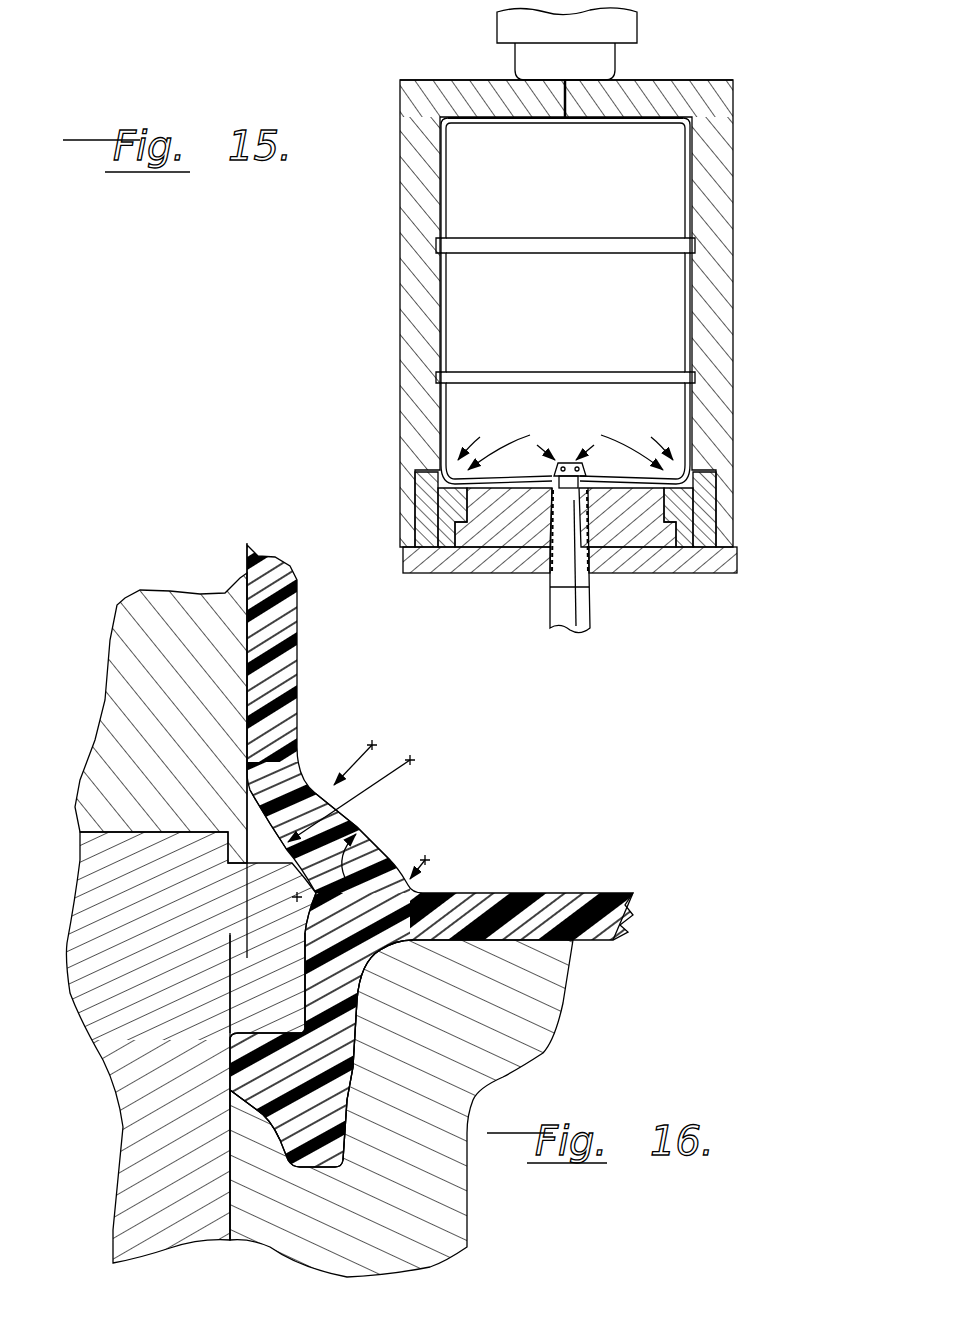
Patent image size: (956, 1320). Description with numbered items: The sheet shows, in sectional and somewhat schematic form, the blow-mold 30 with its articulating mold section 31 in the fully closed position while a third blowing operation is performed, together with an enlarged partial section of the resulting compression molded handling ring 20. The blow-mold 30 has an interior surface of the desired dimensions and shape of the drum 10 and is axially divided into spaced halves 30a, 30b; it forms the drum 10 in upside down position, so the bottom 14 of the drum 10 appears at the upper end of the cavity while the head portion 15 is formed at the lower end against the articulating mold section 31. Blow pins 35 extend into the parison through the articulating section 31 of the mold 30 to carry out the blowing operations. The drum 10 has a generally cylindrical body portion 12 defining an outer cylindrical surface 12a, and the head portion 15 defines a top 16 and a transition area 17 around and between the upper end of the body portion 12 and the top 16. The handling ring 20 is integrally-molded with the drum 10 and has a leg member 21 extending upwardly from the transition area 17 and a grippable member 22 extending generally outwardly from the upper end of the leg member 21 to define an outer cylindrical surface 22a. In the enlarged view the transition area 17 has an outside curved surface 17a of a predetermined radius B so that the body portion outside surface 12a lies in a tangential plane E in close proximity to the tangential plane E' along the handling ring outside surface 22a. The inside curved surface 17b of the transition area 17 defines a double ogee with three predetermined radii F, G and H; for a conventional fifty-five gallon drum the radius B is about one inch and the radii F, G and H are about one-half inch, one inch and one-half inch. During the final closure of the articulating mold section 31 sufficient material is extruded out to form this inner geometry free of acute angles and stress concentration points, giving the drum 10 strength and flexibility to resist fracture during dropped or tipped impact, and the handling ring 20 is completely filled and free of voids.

In FIG. 15, the blow-mold 30 is at (447, 78).
In FIG. 16, the blow-mold 30 is at (122, 1117).
In FIG. 15, the mold half 30a is at (417, 228).
In FIG. 15, the mold half 30b is at (718, 197).
In FIG. 15, the bottom 14 is at (642, 110).
In FIG. 15, the drum 10 is at (440, 302).
In FIG. 15, the head portion 15 is at (605, 468).
In FIG. 16, the head portion 15 is at (598, 945).
In FIG. 15, the handling ring 20 is at (434, 485).
In FIG. 16, the handling ring 20 is at (346, 1090).
In FIG. 15, the articulating mold section 31 is at (485, 570).
In FIG. 16, the articulating mold section 31 is at (472, 1210).
In FIG. 15, the blow pin 35 is at (575, 560).
In FIG. 16, the body portion 12 is at (245, 668).
In FIG. 16, the outer cylindrical surface 12a is at (247, 746).
In FIG. 16, the top 16 is at (500, 893).
In FIG. 16, the transition area 17 is at (400, 837).
In FIG. 16, the outside curved surface 17a is at (262, 843).
In FIG. 16, the inside curved surface 17b is at (384, 845).
In FIG. 16, the leg member 21 is at (358, 990).
In FIG. 16, the grippable member 22 is at (270, 1105).
In FIG. 16, the outer cylindrical surface 22a is at (230, 1063).
In FIG. 16, the predetermined radius H is at (372, 745).
In FIG. 16, the predetermined radius B is at (407, 760).
In FIG. 16, the predetermined radius F is at (425, 860).
In FIG. 16, the predetermined radius G is at (352, 870).
In FIG. 16, the tangential plane E is at (223, 910).
In FIG. 16, the tangential plane E' is at (189, 984).